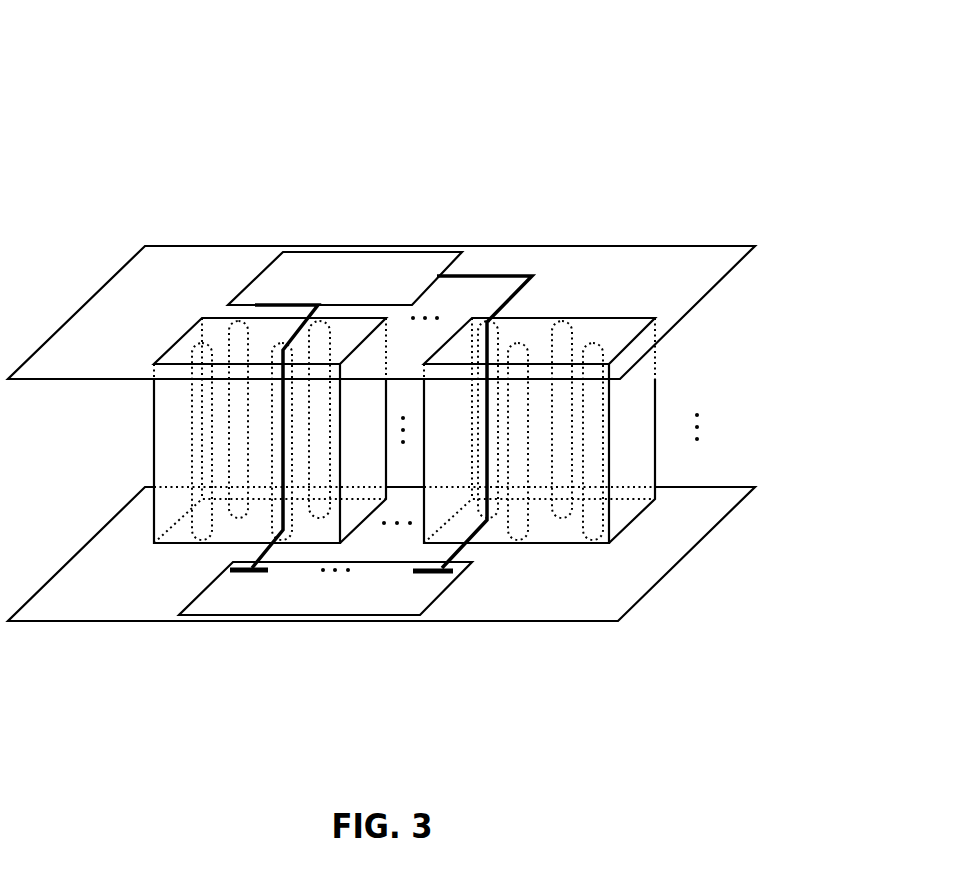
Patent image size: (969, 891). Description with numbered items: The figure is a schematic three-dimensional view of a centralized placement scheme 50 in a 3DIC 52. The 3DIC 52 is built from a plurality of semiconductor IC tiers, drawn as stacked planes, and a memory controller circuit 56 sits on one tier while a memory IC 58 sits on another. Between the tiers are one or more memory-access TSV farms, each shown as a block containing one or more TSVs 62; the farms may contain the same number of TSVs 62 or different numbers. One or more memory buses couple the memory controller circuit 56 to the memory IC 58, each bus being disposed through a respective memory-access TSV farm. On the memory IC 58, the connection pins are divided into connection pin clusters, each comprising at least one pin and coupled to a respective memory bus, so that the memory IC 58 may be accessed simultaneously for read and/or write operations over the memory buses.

The centralized placement scheme 50 is at (166, 104).
The 3DIC 52 is at (396, 391).
The memory controller circuit 56 is at (377, 252).
The memory IC 58 is at (330, 617).
The TSV 62 is at (192, 410).